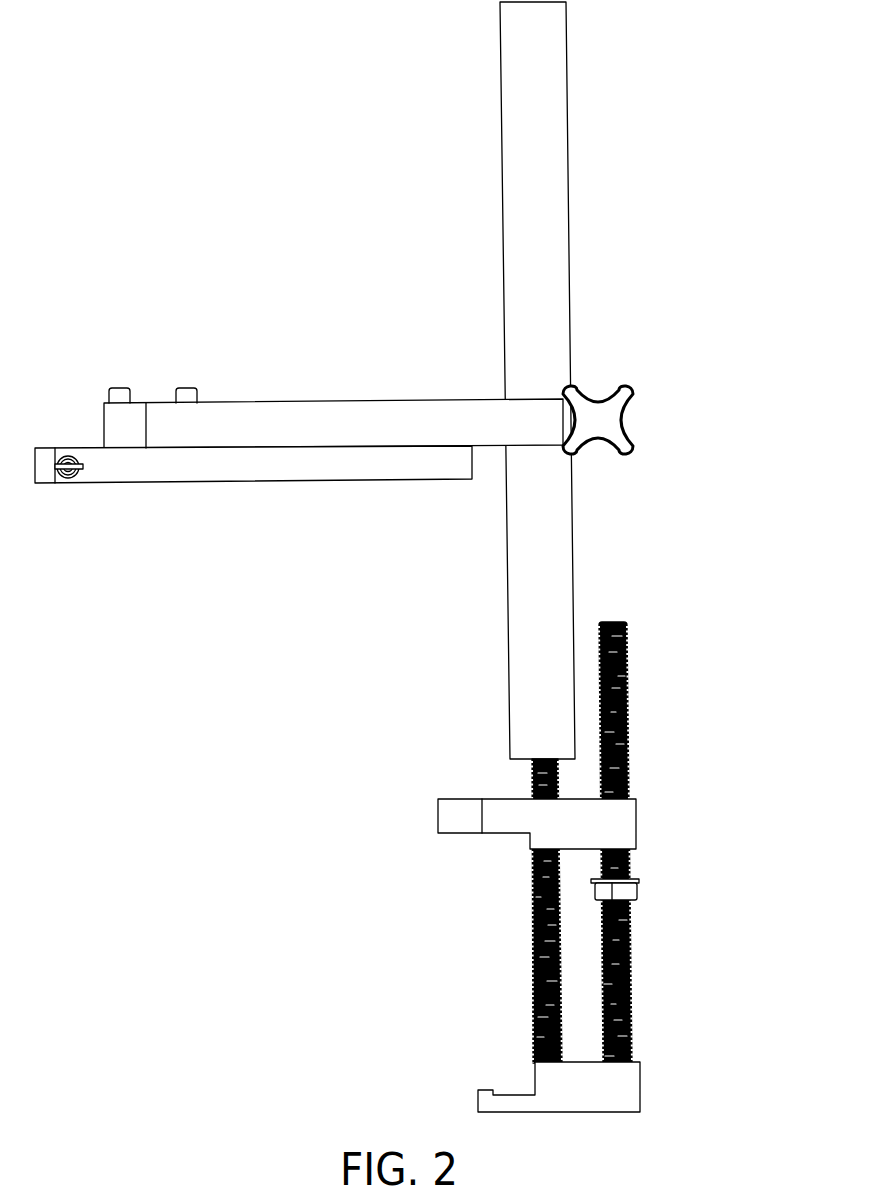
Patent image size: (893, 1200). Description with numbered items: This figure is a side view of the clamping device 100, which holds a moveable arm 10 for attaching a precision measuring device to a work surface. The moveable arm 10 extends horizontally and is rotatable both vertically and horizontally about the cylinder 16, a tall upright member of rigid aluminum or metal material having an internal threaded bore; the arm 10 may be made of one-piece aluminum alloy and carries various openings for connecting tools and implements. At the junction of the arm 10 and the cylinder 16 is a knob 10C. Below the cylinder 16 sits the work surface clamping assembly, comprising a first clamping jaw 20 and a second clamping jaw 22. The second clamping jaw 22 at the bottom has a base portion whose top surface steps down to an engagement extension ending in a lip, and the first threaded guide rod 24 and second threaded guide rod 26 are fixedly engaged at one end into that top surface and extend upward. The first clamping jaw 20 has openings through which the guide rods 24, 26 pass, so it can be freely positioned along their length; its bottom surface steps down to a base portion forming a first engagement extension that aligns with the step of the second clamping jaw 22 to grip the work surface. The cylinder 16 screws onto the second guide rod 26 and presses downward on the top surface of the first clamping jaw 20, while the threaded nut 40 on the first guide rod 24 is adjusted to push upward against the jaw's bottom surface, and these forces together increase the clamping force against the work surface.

The moveable arm 10 is at (272, 400).
The clamp knob 10C is at (597, 405).
The cylinder 16 is at (568, 195).
The first clamping jaw 20 is at (660, 822).
The second clamping jaw 22 is at (662, 1089).
The first threaded guide rod 24 is at (627, 712).
The second threaded guide rod 26 is at (533, 946).
The threaded nut 40 is at (623, 893).
The clamping device 100 is at (428, 564).